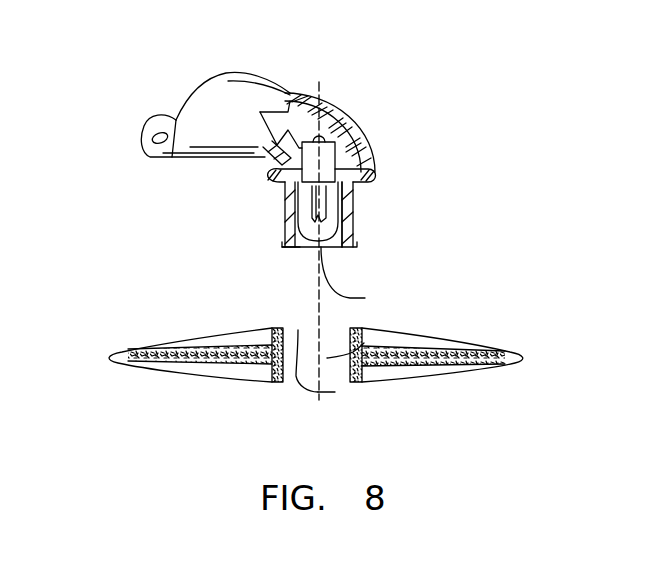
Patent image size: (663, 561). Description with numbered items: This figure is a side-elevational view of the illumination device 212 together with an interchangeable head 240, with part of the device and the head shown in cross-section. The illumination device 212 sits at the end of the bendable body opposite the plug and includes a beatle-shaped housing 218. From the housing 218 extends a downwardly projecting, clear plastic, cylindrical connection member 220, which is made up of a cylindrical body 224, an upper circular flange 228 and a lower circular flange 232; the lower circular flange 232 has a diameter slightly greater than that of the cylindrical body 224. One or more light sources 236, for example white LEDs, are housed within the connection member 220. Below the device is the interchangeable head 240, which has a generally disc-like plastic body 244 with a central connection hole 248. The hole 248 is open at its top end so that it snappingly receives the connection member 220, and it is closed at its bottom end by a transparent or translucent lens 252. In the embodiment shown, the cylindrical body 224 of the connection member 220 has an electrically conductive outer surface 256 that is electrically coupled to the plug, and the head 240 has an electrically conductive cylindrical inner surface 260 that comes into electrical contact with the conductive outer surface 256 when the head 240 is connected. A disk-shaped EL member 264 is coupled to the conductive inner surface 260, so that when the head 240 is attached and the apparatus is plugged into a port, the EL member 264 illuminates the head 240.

The illumination device 212 is at (250, 90).
The housing 218 is at (208, 75).
The connection member 220 is at (360, 247).
The cylindrical body 224 is at (353, 212).
The upper circular flange 228 is at (377, 170).
The lower circular flange 232 is at (287, 247).
The light source 236 is at (363, 278).
The interchangeable head 240 is at (286, 369).
The disc-like plastic body 244 is at (494, 339).
The central connection hole 248 is at (318, 392).
The lens 252 is at (335, 392).
The electrically conductive outer surface 256 is at (290, 205).
The electrically conductive cylindrical inner surface 260 is at (327, 358).
The disk-shaped EL member 264 is at (442, 366).